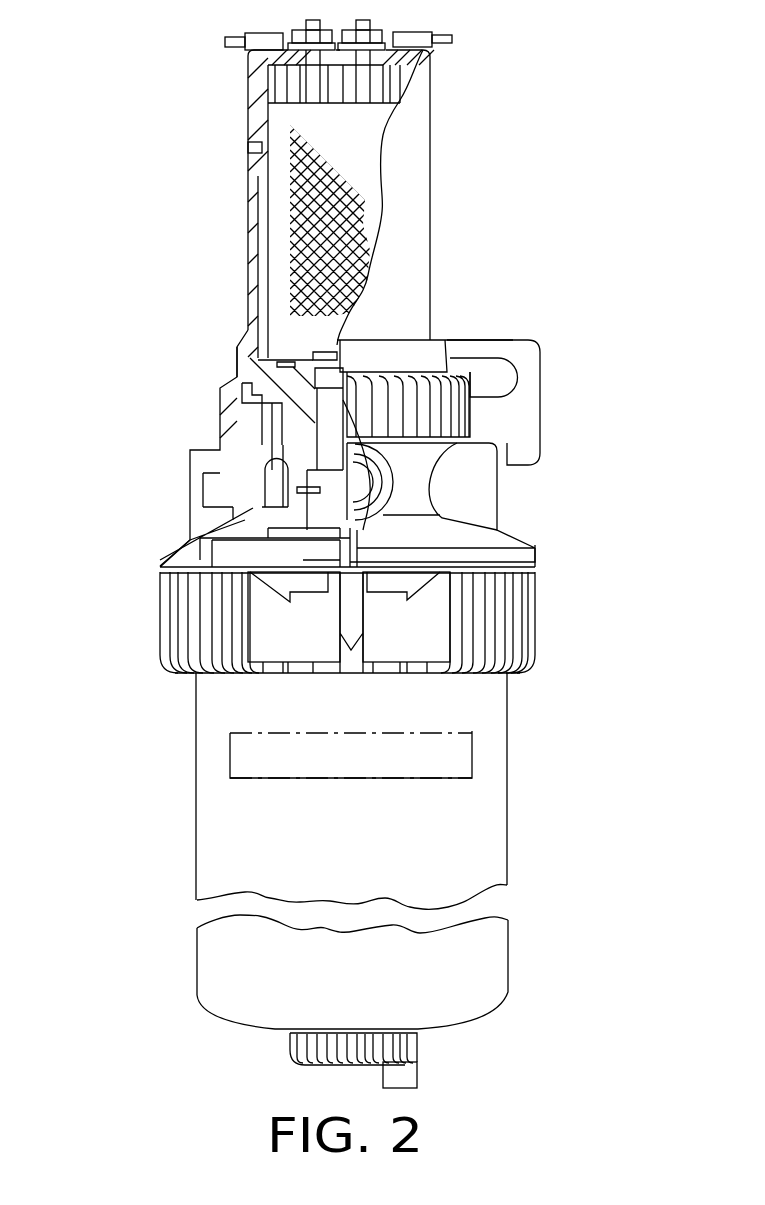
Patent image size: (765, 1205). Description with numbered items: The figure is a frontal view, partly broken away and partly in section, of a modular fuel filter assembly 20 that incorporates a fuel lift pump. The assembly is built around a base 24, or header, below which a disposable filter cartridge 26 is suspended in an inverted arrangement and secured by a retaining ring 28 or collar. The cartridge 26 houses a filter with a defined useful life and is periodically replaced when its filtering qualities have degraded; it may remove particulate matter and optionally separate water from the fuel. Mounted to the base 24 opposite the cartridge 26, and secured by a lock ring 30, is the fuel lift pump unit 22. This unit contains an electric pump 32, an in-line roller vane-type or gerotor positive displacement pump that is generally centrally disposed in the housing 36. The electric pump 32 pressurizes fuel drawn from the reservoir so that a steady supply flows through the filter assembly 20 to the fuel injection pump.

The fuel filter assembly 20 is at (95, 531).
The fuel lift pump unit 22 is at (207, 196).
The base 24 is at (478, 488).
The disposable filter cartridge 26 is at (493, 807).
The retaining ring 28 is at (535, 602).
The lock ring 30 is at (473, 375).
The electric pump 32 is at (297, 152).
The housing 36 is at (250, 260).